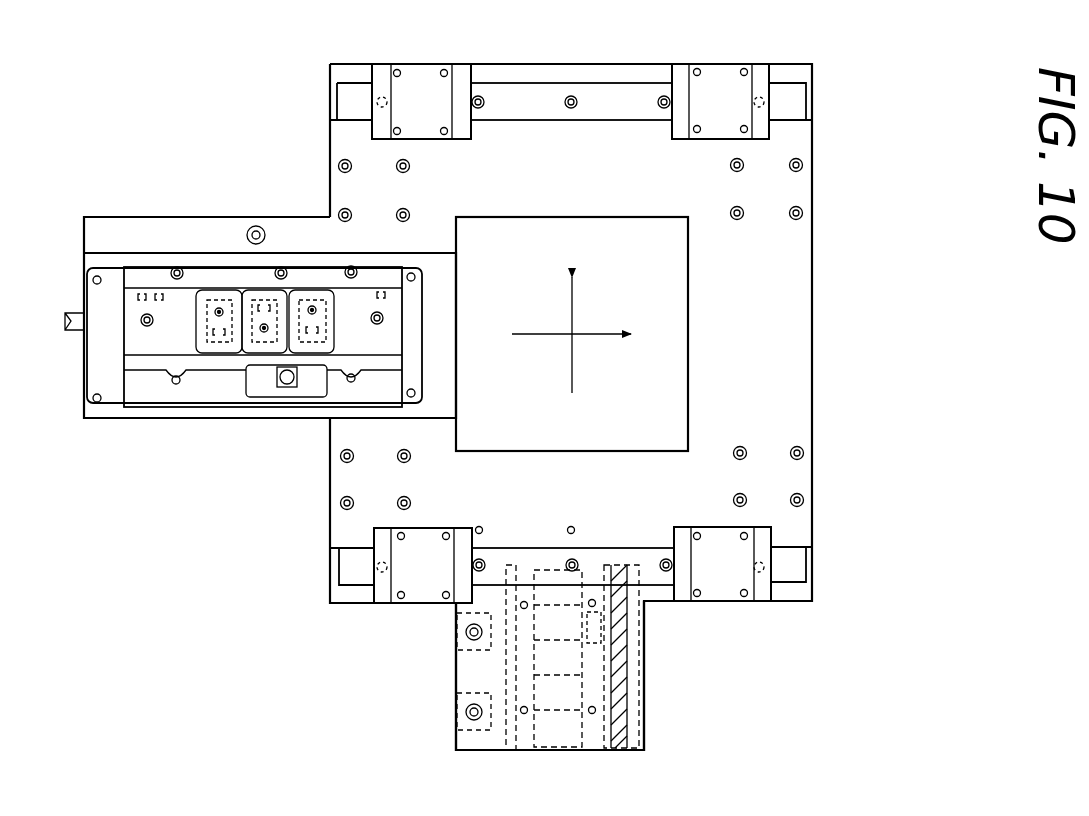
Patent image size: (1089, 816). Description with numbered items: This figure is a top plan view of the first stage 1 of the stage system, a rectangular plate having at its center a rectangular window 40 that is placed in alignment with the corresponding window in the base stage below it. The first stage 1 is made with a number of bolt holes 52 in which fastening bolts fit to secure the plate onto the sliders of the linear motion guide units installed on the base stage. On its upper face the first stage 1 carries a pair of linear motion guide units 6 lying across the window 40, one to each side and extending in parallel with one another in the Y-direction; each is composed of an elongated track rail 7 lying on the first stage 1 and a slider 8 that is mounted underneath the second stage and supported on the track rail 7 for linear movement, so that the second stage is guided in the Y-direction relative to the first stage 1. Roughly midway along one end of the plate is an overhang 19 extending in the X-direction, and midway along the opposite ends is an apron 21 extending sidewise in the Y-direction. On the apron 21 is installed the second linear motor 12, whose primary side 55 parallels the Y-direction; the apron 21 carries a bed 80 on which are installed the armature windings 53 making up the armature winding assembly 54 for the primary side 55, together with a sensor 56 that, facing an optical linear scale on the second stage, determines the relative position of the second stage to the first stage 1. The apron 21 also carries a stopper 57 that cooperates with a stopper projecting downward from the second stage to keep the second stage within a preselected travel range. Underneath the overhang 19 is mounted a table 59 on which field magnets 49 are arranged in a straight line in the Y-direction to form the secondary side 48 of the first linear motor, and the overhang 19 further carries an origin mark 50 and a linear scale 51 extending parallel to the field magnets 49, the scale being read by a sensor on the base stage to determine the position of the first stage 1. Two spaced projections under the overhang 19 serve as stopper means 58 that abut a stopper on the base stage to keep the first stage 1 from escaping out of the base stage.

The first stage 1 is at (776, 277).
The linear motion guide units 6 is at (726, 58).
The track rail 7 is at (611, 103).
The slider 8 is at (419, 92).
The second linear motor 12 is at (213, 370).
The overhang 19 is at (642, 660).
The apron 21 is at (150, 412).
The window 40 is at (502, 450).
The secondary side 48 is at (597, 745).
The field magnets 49 is at (545, 685).
The origin mark 50 is at (603, 628).
The linear scale 51 is at (620, 685).
The bolt hole 52 is at (804, 211).
The armature windings 53 is at (293, 297).
The armature winding assembly 54 is at (175, 303).
The primary side 55 is at (113, 298).
The sensor 56 is at (265, 385).
The stopper 57 is at (259, 227).
The stopper means 58 is at (462, 712).
The table 59 is at (521, 737).
The bed 80 is at (148, 340).